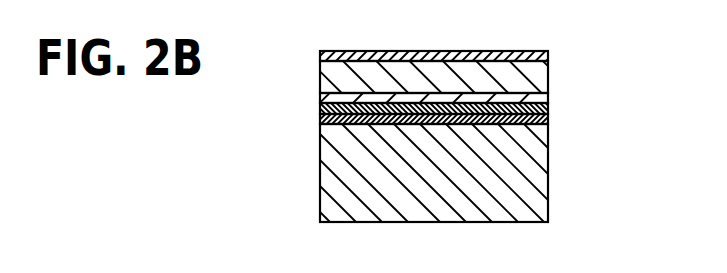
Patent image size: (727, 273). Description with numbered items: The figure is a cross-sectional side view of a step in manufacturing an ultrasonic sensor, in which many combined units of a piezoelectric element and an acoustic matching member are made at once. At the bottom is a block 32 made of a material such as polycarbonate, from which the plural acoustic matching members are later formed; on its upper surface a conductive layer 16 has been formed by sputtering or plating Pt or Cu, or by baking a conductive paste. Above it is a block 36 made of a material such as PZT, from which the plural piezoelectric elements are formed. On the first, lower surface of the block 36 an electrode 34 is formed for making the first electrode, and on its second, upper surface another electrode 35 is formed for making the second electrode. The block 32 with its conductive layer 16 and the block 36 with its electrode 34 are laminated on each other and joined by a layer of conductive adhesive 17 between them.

The electrode 35 is at (548, 56).
The block 36 is at (548, 77).
The electrode 34 is at (548, 98).
The conductive adhesive 17 is at (548, 106).
The conductive layer 16 is at (548, 118).
The block 32 is at (548, 209).